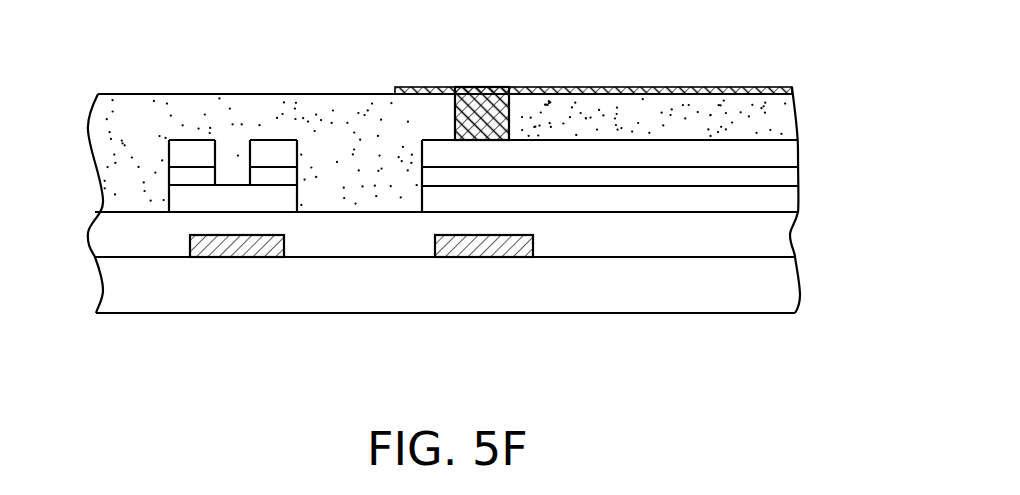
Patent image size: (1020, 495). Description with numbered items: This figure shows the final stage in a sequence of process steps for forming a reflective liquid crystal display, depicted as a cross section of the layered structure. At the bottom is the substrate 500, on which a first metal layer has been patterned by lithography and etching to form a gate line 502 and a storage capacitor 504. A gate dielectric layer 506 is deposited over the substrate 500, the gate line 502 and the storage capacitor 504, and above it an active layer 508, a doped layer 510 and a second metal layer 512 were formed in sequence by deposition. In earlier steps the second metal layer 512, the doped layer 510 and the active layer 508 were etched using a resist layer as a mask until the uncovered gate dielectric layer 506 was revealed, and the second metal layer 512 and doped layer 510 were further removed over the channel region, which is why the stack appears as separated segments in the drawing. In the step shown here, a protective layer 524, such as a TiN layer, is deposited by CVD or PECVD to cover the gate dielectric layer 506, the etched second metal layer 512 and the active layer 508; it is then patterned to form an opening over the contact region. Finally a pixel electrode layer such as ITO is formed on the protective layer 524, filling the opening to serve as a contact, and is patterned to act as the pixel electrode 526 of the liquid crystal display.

The substrate 500 is at (772, 288).
The gate line 502 is at (243, 257).
The storage capacitor 504 is at (491, 257).
The gate dielectric layer 506 is at (772, 233).
The active layer 508 is at (180, 200).
The doped layer 510 is at (180, 177).
The second metal layer 512 is at (180, 152).
The protective layer 524 is at (123, 121).
The pixel electrode 526 is at (482, 87).